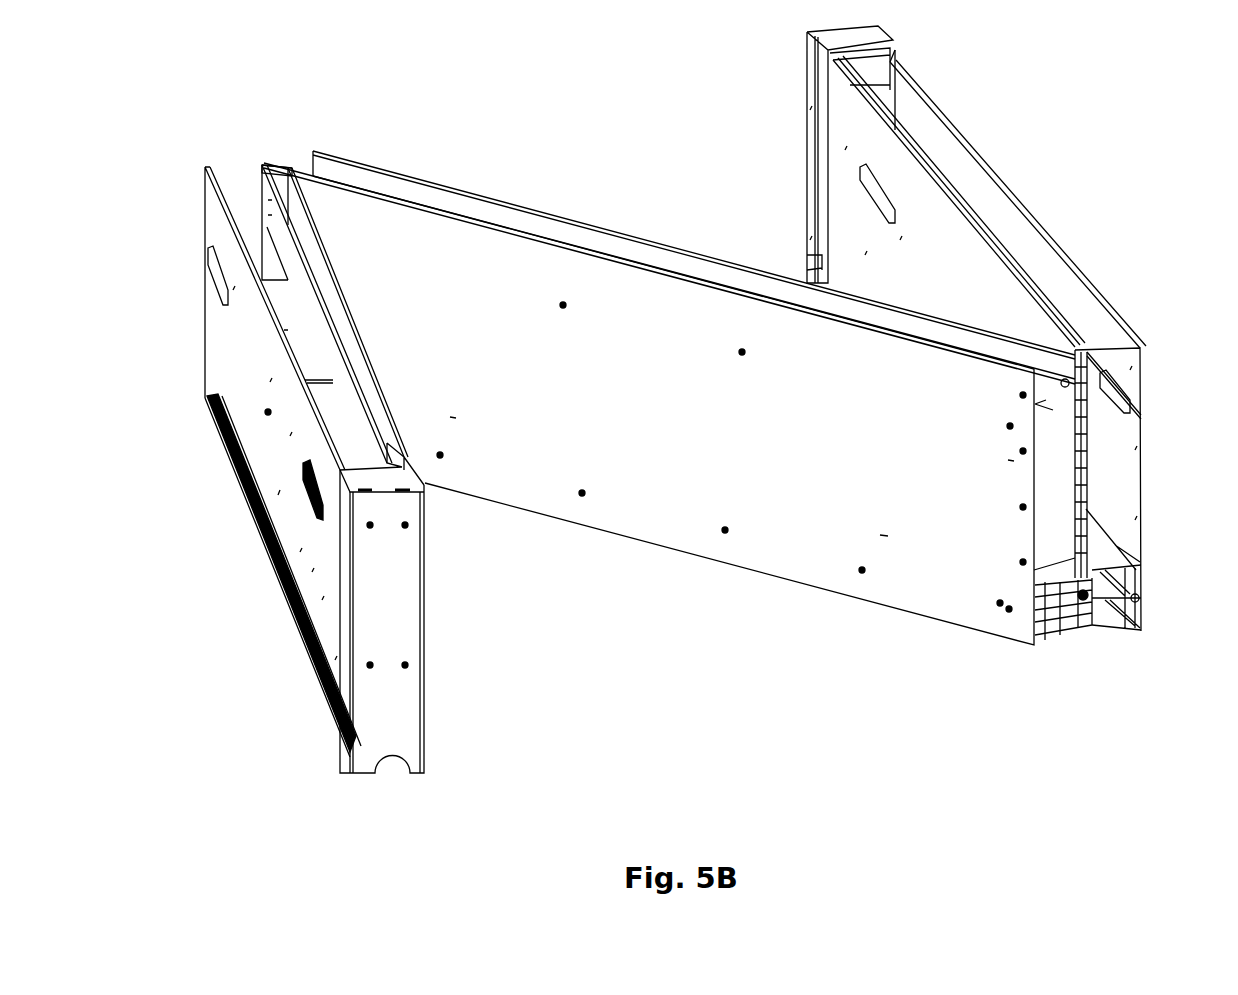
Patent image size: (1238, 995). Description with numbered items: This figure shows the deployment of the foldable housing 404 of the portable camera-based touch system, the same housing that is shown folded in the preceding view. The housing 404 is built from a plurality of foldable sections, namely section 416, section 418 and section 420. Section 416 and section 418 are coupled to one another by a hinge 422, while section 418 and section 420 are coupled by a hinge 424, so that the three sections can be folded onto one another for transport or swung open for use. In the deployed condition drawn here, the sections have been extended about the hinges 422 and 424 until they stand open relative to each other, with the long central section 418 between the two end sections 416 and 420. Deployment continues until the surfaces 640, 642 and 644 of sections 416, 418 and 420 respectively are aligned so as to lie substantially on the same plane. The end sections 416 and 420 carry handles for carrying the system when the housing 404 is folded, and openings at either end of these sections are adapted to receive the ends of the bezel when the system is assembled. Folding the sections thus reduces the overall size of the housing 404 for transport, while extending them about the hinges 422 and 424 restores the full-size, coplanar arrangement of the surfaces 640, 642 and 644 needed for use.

The housing 404 is at (585, 580).
The section 416 is at (939, 148).
The section 418 is at (554, 234).
The section 420 is at (294, 335).
The hinge 422 is at (1074, 350).
The hinge 424 is at (281, 165).
The surface 640 is at (968, 256).
The surface 642 is at (680, 251).
The surface 644 is at (230, 359).